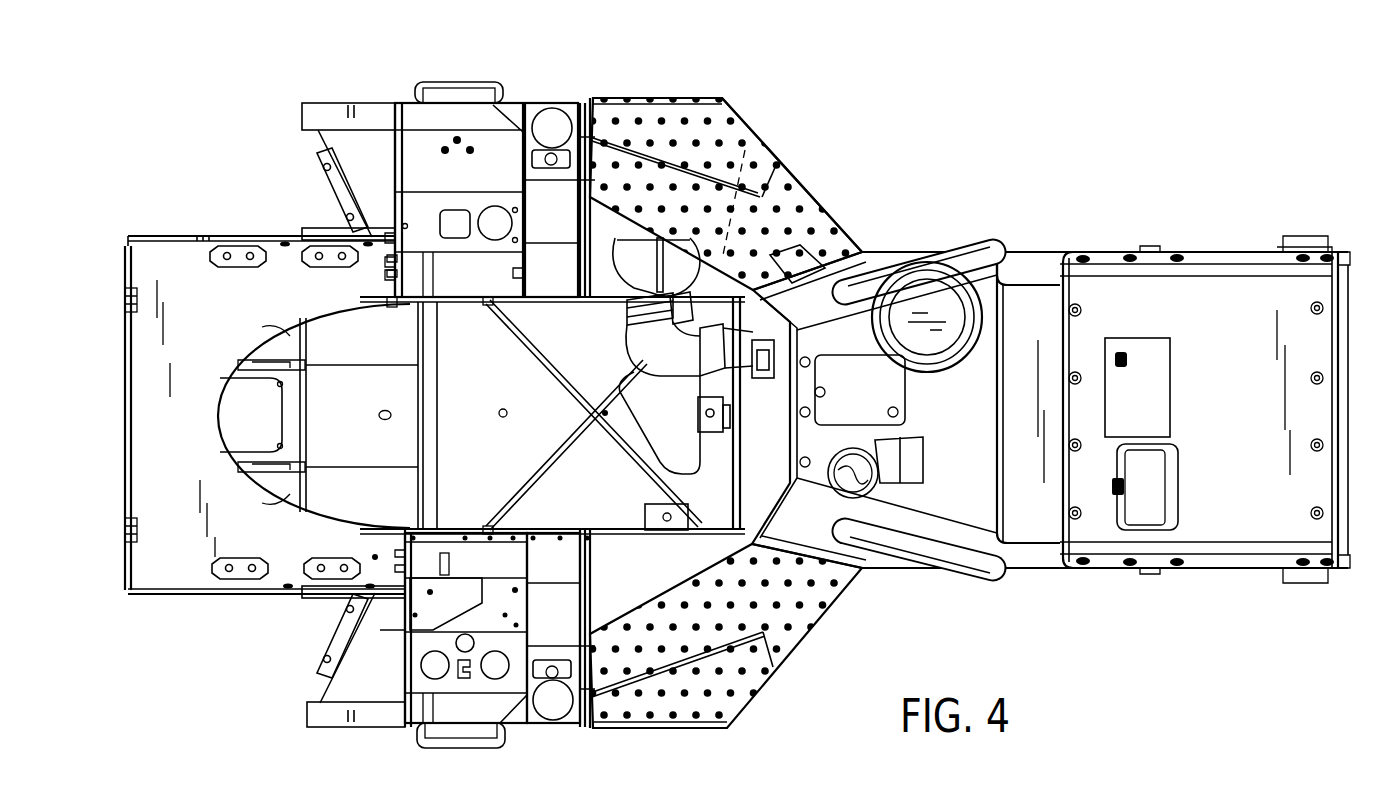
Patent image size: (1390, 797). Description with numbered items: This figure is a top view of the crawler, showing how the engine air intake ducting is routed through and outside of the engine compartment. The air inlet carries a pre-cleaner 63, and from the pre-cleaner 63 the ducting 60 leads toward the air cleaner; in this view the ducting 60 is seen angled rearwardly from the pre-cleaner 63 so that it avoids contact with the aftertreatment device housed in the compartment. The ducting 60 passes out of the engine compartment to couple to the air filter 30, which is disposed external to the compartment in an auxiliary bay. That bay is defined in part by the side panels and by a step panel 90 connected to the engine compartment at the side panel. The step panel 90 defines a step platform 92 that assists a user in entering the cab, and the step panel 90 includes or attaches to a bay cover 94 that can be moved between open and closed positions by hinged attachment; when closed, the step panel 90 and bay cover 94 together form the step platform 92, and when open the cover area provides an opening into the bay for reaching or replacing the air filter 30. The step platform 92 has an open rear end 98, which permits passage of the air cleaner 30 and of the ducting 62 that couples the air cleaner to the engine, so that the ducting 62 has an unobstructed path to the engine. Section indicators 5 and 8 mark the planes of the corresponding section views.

The section line 5- 5 is at (160, 417).
The section line 8- 8 is at (596, 445).
The air filter 30 is at (612, 245).
The ducting 60 is at (858, 250).
The ducting 62 is at (653, 372).
The pre-cleaner 63 is at (938, 293).
The step panel 90 is at (787, 190).
The step platform 92 is at (800, 150).
The bay cover 94 is at (677, 107).
The open rear end 98 is at (600, 195).